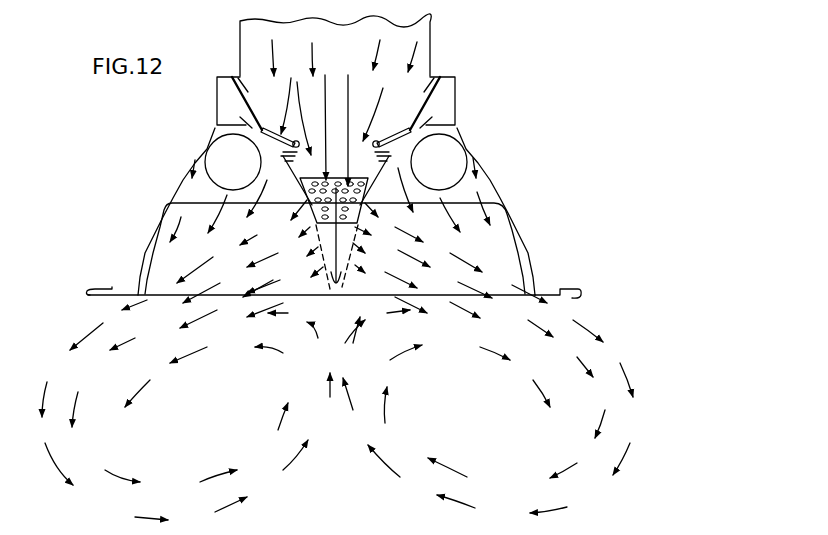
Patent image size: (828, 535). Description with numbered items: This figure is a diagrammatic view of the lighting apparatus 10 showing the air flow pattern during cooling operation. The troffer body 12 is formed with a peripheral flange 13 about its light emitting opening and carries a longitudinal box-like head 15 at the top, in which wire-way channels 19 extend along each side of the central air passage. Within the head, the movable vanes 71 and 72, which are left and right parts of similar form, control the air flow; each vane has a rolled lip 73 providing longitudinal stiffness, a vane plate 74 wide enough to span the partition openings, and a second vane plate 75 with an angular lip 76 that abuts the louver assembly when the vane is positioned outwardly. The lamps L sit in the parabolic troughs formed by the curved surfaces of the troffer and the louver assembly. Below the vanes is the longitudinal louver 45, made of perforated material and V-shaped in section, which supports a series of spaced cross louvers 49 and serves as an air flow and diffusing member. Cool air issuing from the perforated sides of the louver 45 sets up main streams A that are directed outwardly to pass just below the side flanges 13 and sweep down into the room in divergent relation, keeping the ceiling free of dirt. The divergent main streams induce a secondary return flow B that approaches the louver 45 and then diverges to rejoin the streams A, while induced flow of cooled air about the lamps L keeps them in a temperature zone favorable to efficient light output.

The apparatus 10 is at (342, 165).
The troffer body 12 is at (506, 186).
The peripheral flange 13 is at (93, 297).
The head 15 is at (356, 72).
The channels 19 is at (454, 79).
The louver 45 is at (323, 280).
The cross louvers 49 is at (500, 234).
The movable vane 71 is at (290, 96).
The movable vane 72 is at (387, 113).
The rolled lip 73 is at (300, 141).
The vane plate 74 is at (263, 127).
The second vane plate 75 is at (258, 148).
The angular lip 76 is at (338, 180).
The lamps L is at (213, 138).
The main streams A is at (131, 338).
The induced return flow B is at (350, 408).